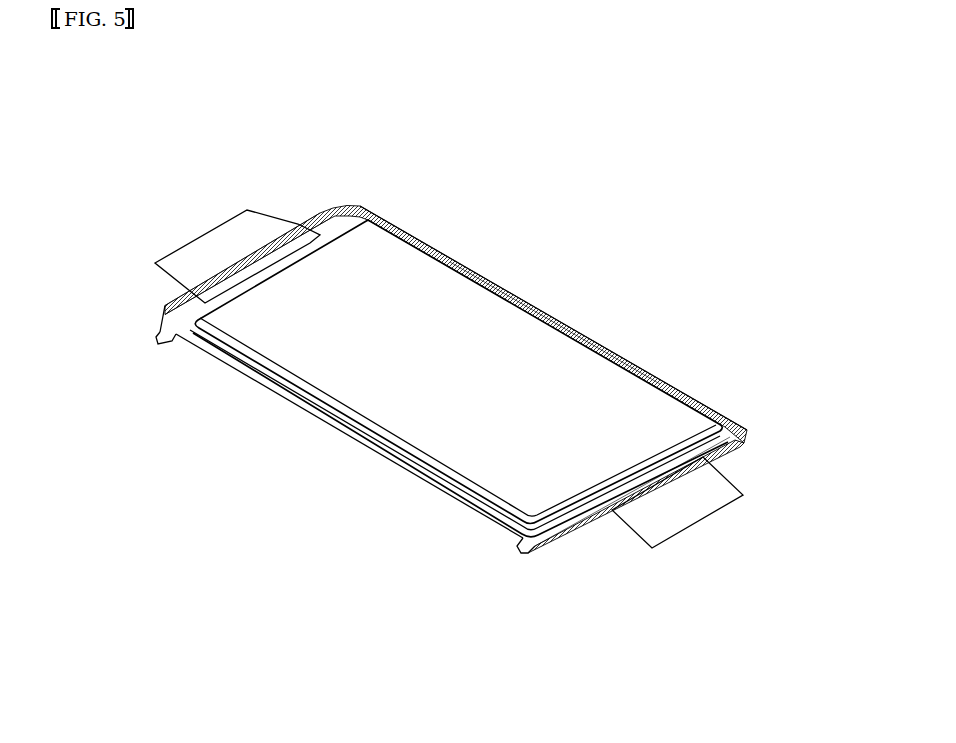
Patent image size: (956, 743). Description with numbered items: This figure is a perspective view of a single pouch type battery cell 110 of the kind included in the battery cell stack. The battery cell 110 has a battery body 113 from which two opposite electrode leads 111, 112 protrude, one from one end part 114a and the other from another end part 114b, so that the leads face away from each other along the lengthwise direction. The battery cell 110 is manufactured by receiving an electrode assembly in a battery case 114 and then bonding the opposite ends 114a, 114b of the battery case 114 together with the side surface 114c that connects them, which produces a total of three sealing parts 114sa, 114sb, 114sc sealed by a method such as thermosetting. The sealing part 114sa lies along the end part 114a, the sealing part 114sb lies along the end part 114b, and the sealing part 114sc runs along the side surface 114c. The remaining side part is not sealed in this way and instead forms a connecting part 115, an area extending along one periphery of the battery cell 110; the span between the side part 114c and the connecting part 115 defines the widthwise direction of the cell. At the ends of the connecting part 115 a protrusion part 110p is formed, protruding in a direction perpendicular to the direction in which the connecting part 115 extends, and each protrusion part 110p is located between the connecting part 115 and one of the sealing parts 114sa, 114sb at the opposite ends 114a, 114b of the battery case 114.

The battery cell 110 is at (107, 95).
The protrusion part 110p is at (157, 335).
The electrode lead 111 is at (221, 242).
The electrode lead 112 is at (703, 518).
The battery body 113 is at (460, 306).
The battery case 114 is at (730, 424).
The one end part of battery case 114a is at (340, 221).
The another end part of battery case 114b is at (560, 535).
The side surface of battery case 114c is at (560, 323).
The sealing part 114sa is at (316, 218).
The sealing part 114sb is at (730, 458).
The sealing part 114sc is at (661, 380).
The connecting part 115 is at (373, 446).